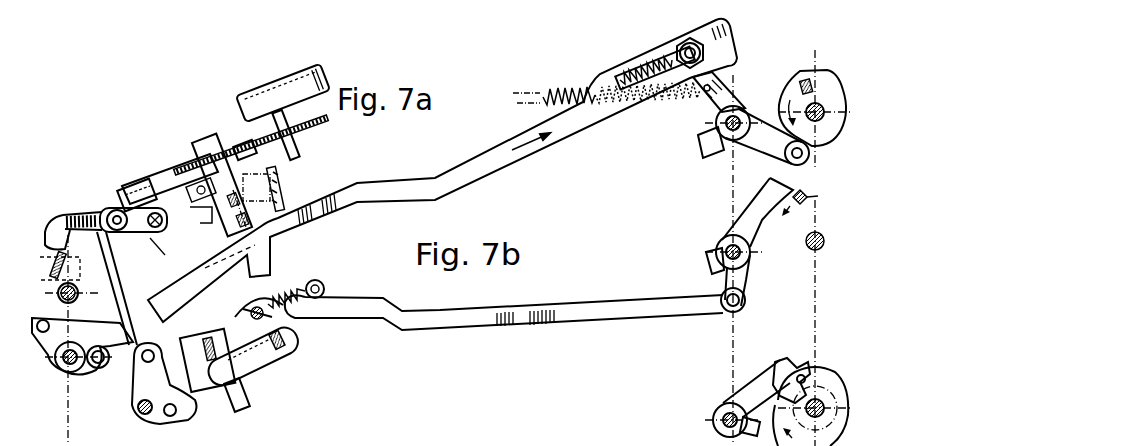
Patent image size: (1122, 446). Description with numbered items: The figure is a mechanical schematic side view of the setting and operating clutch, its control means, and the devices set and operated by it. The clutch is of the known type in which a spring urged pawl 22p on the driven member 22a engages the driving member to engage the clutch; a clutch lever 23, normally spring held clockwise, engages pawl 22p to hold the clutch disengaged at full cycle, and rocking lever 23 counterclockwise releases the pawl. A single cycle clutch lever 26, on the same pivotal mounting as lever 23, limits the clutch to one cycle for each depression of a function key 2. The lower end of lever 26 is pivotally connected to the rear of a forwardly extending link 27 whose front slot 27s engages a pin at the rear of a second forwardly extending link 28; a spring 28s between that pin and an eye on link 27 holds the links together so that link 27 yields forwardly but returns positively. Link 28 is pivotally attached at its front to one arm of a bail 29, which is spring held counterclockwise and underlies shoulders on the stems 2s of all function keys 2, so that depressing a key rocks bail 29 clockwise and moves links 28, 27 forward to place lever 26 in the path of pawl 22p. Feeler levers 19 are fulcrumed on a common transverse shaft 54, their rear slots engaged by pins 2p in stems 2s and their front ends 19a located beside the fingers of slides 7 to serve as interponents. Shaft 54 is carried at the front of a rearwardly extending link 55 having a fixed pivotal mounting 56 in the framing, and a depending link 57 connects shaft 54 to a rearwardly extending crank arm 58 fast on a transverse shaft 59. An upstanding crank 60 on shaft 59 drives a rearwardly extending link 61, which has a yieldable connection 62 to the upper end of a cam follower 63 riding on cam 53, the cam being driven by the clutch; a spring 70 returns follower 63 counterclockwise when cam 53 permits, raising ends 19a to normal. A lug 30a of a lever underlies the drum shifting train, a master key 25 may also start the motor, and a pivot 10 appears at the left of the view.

In FIG. 7A, the function keys 2 is at (300, 92).
In FIG. 7A, the pin 2p is at (190, 176).
In FIG. 7A, the stems 2s is at (205, 323).
In FIG. 7A, the slides 7 is at (53, 258).
In FIG. 7A, the pivot shaft 10 is at (63, 339).
In FIG. 7A, the feeler levers 19 is at (90, 215).
In FIG. 7A, the lever end 19a is at (49, 222).
In FIG. 7B, the driven member 22a is at (826, 372).
In FIG. 7B, the pawl 22p is at (805, 360).
In FIG. 7B, the clutch lever 23 is at (778, 372).
In FIG. 7B, the master key 25 is at (60, 445).
In FIG. 7B, the single cycle clutch lever 26 is at (784, 186).
In FIG. 7B, the link 27 is at (622, 306).
In FIG. 7B, the slot 27s is at (258, 288).
In FIG. 7B, the link 28 is at (250, 368).
In FIG. 7B, the lever spring 28s is at (296, 286).
In FIG. 7B, the bail 29 is at (244, 406).
In FIG. 7A, the lug 30a is at (283, 186).
In FIG. 7A, the cam 53 is at (792, 88).
In FIG. 7A, the transverse shaft 54 is at (140, 186).
In FIG. 7A, the link 55 is at (106, 210).
In FIG. 7A, the pivotal mounting 56 is at (150, 259).
In FIG. 7A, the depending link 57 is at (125, 292).
In FIG. 7B, the crank arm 58 is at (153, 383).
In FIG. 7B, the transverse shaft 59 is at (90, 372).
In FIG. 7B, the crank 60 is at (48, 350).
In FIG. 7A, the link 61 is at (503, 158).
In FIG. 7A, the yieldable connection 62 is at (656, 62).
In FIG. 7A, the cam follower 63 is at (716, 105).
In FIG. 7A, the spring 70 is at (672, 108).